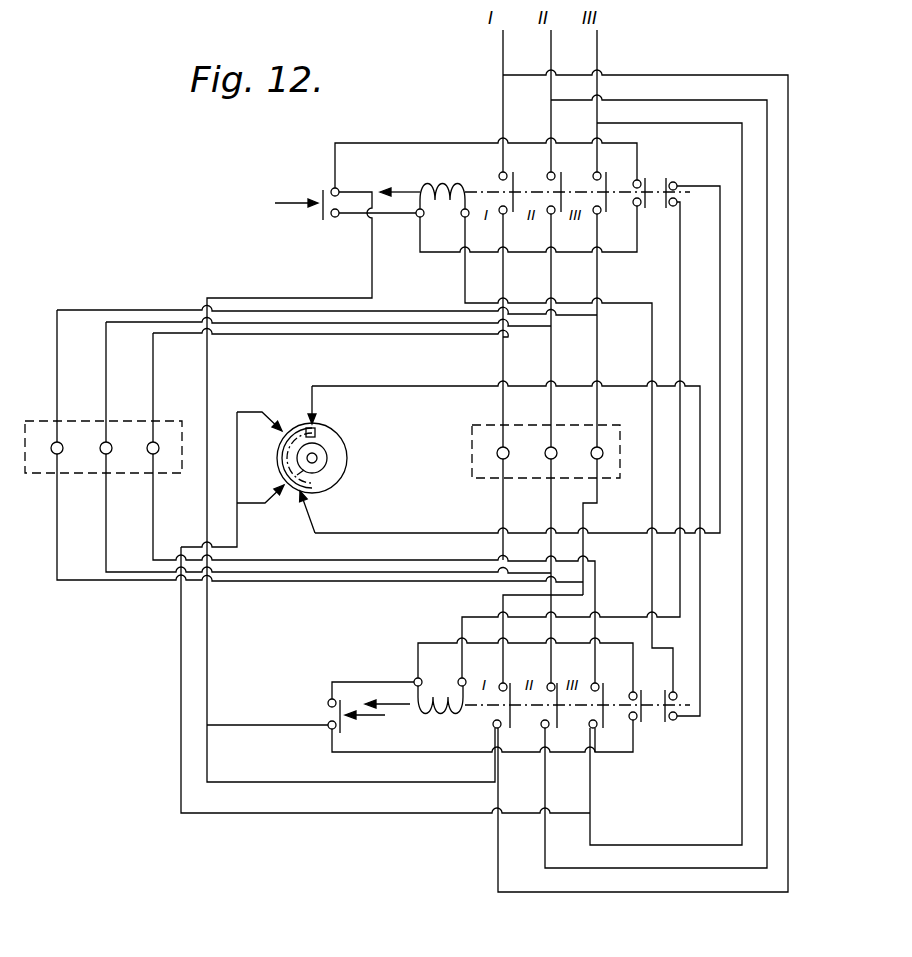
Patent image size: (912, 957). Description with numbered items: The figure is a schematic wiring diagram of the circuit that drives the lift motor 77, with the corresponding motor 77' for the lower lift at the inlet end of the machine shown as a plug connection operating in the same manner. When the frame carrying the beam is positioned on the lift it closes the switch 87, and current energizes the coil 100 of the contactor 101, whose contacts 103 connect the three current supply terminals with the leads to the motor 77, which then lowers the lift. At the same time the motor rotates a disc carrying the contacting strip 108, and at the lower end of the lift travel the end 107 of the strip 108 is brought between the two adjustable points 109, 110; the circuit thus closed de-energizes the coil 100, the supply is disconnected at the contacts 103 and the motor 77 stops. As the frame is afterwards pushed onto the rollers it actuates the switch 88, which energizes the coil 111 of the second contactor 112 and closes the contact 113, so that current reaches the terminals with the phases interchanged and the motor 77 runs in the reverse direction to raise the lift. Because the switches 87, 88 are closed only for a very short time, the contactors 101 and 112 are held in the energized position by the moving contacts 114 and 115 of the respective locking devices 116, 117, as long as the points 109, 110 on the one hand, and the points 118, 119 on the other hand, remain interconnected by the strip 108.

The switch 87 is at (307, 215).
The switch 88 is at (330, 700).
The coil 100 is at (424, 188).
The contactor 101 is at (452, 254).
The contacts 103 is at (528, 190).
The end of contacting strip 107 is at (333, 430).
The contacting strip 108 is at (283, 460).
The adjustable point 109 is at (284, 424).
The adjustable point 110 is at (308, 420).
The coil 111 is at (415, 710).
The contactor 112 is at (468, 616).
The contact 113 is at (554, 710).
The moving contact 114 is at (645, 178).
The moving contact 115 is at (638, 728).
The locking device 116 is at (672, 182).
The locking device 117 is at (674, 722).
The point 118 is at (287, 496).
The point 119 is at (305, 498).
The motor 77 is at (538, 473).
The motor 77' is at (103, 465).